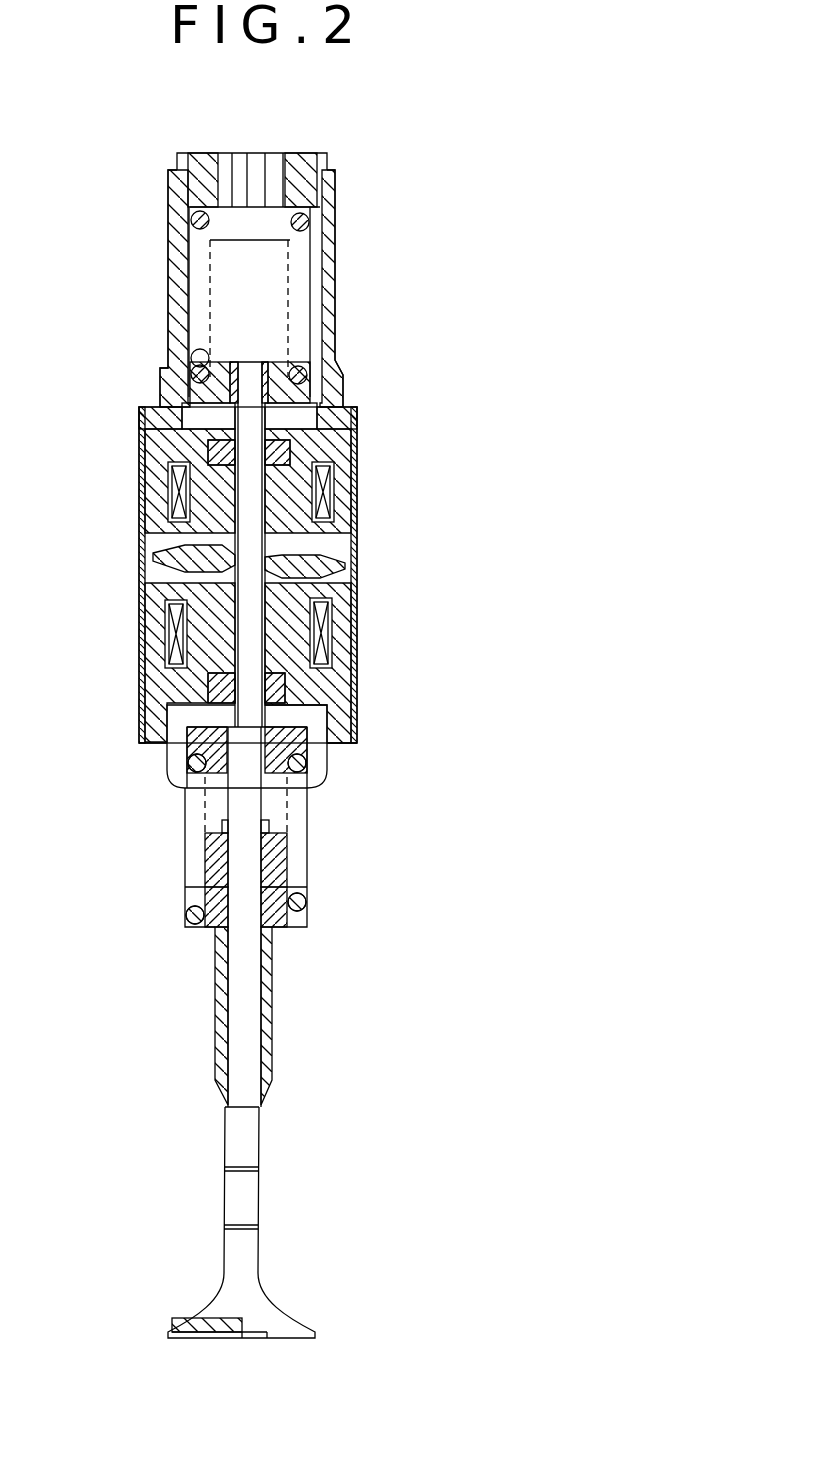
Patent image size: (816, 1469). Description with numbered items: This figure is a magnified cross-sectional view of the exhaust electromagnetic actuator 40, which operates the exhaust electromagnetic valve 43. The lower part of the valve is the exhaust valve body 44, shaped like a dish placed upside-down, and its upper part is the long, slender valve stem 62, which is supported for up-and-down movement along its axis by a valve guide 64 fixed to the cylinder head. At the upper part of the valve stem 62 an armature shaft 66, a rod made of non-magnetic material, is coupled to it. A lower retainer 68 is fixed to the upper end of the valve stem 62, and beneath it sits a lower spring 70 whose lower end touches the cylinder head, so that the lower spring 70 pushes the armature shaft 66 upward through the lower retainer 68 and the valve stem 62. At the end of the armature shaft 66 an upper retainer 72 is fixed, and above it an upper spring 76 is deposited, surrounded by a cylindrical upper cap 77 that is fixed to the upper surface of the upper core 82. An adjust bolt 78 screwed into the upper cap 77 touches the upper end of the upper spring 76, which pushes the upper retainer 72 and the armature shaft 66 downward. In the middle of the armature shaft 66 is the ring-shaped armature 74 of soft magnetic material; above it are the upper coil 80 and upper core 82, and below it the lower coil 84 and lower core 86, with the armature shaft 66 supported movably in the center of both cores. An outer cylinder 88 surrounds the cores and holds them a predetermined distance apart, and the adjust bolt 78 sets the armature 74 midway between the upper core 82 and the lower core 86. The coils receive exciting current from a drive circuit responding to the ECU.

The exhaust electromagnetic actuator 40 is at (345, 253).
The exhaust electromagnetic valve 43 is at (270, 1203).
The exhaust valve body 44 is at (232, 1303).
The valve stem 62 is at (238, 1129).
The valve guide 64 is at (222, 1017).
The armature shaft 66 is at (351, 583).
The lower retainer 68 is at (300, 747).
The lower spring 70 is at (308, 837).
The upper retainer 72 is at (307, 397).
The armature 74 is at (160, 557).
The upper spring 76 is at (308, 305).
The upper cap 77 is at (168, 325).
The adjust bolt 78 is at (303, 152).
The upper coil 80 is at (168, 492).
The upper core 82 is at (343, 423).
The lower coil 84 is at (163, 640).
The lower core 86 is at (355, 710).
The outer cylinder 88 is at (138, 577).